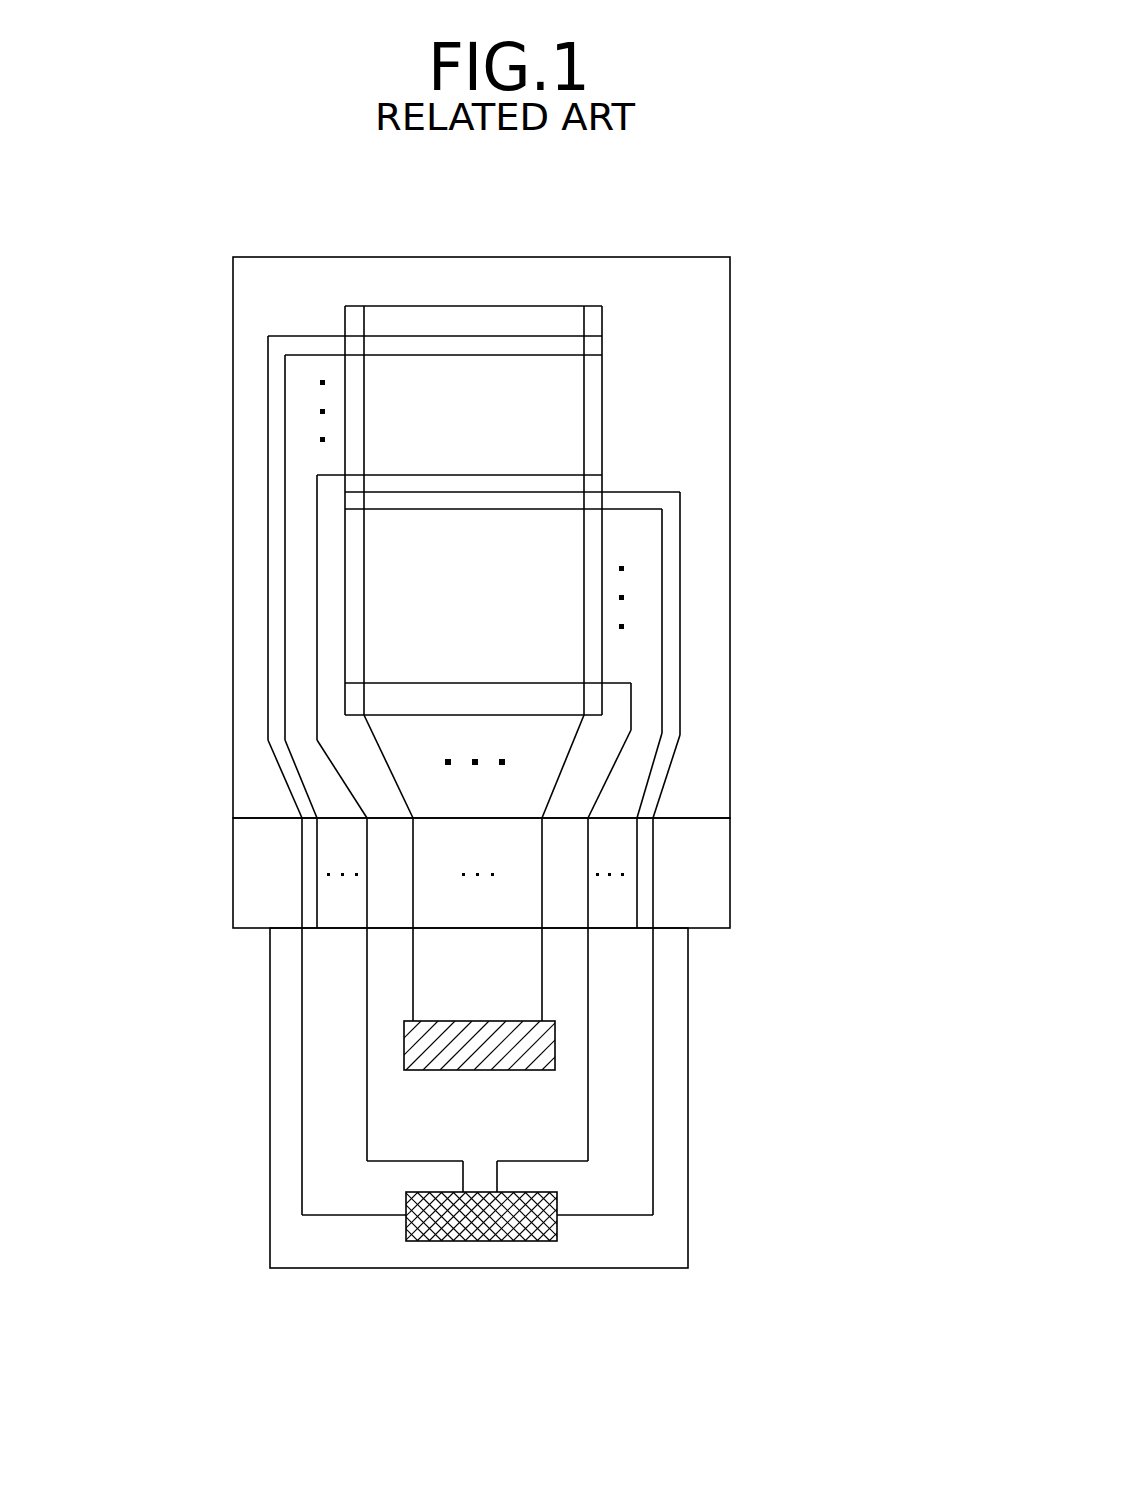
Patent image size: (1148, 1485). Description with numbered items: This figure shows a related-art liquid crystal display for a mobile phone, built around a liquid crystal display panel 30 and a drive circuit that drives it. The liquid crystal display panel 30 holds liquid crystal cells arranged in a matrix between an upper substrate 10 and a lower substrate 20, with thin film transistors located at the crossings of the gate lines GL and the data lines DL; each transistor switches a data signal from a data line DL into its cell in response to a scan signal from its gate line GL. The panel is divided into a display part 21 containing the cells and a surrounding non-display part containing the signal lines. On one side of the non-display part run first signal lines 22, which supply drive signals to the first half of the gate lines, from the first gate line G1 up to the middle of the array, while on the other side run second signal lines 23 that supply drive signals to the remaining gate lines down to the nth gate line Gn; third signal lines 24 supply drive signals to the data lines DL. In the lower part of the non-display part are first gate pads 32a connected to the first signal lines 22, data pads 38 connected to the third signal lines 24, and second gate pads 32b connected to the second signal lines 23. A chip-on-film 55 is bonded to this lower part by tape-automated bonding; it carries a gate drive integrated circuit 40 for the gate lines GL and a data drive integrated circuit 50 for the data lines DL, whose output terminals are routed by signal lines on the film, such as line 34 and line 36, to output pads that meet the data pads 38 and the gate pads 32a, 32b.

The upper substrate 10 is at (716, 782).
The lower substrate 20 is at (716, 871).
The display part 21 is at (497, 420).
The first signal lines 22 is at (245, 598).
The second signal lines 23 is at (765, 627).
The third signal lines 24 is at (383, 755).
The liquid crystal display panel 30 is at (729, 476).
The first gate pads 32a is at (300, 883).
The second gate pads 32b is at (637, 892).
The signal line 34 is at (303, 1130).
The data driver integrated circuit 36 is at (545, 1010).
The data pads 38 is at (462, 912).
The gate drive integrated circuit 40 is at (478, 1241).
The data drive integrated circuit 50 is at (420, 1070).
The chip-on-film 55 is at (688, 1268).
The gate lines GL is at (477, 336).
The first gate line G1 is at (451, 499).
The data lines DL is at (363, 397).
The nth gate line Gn is at (488, 685).